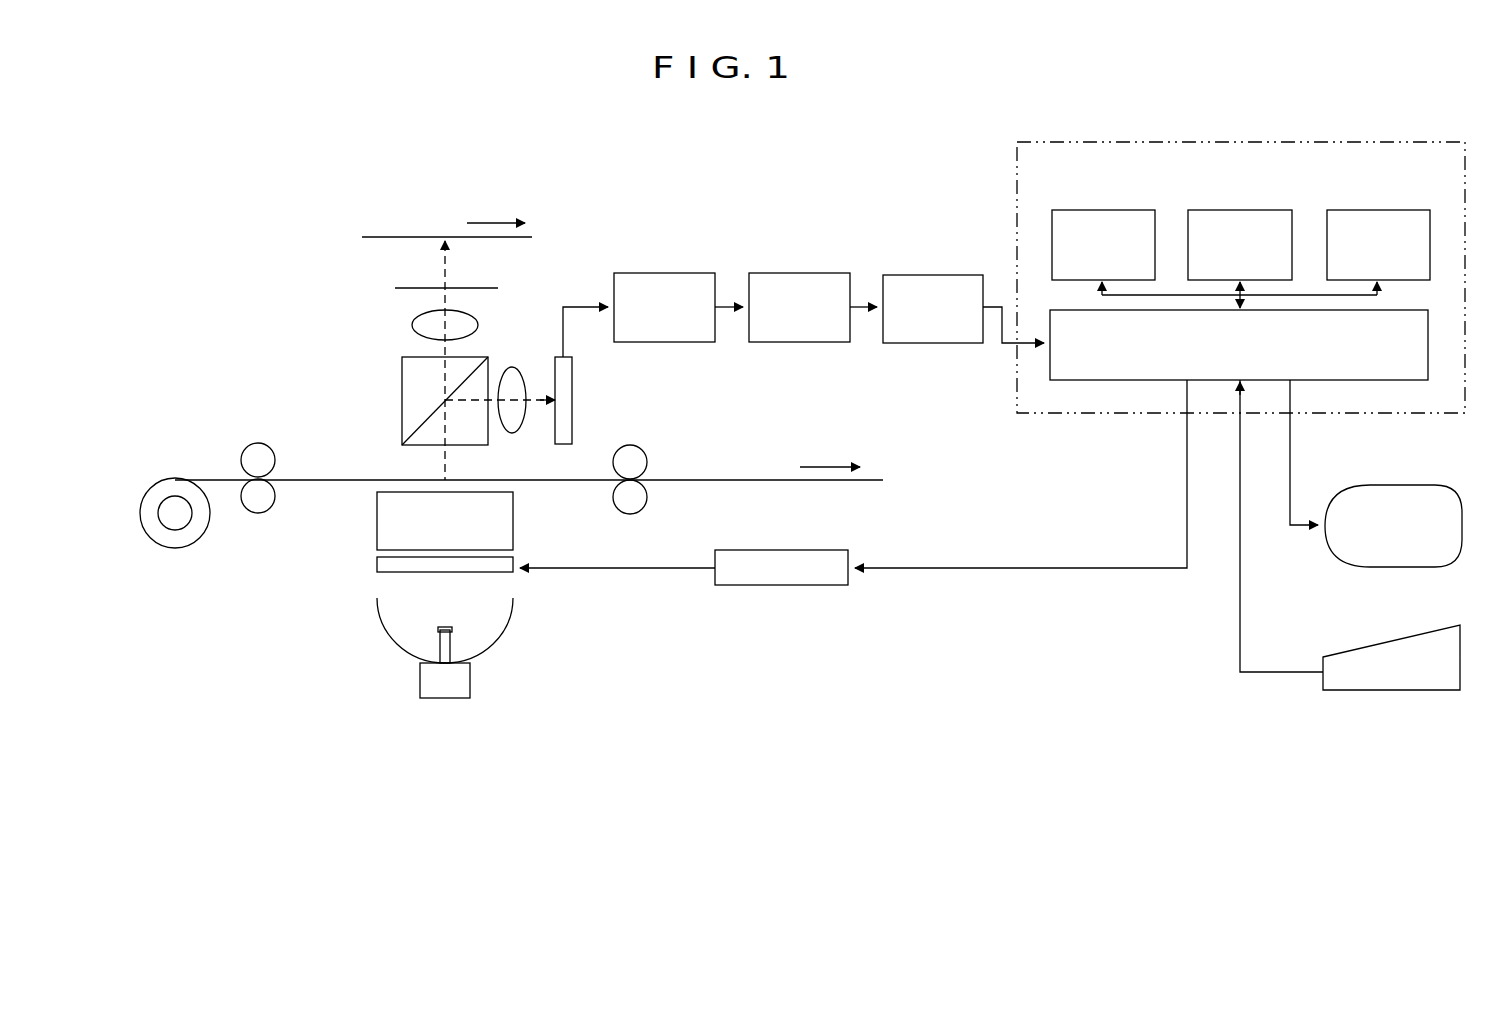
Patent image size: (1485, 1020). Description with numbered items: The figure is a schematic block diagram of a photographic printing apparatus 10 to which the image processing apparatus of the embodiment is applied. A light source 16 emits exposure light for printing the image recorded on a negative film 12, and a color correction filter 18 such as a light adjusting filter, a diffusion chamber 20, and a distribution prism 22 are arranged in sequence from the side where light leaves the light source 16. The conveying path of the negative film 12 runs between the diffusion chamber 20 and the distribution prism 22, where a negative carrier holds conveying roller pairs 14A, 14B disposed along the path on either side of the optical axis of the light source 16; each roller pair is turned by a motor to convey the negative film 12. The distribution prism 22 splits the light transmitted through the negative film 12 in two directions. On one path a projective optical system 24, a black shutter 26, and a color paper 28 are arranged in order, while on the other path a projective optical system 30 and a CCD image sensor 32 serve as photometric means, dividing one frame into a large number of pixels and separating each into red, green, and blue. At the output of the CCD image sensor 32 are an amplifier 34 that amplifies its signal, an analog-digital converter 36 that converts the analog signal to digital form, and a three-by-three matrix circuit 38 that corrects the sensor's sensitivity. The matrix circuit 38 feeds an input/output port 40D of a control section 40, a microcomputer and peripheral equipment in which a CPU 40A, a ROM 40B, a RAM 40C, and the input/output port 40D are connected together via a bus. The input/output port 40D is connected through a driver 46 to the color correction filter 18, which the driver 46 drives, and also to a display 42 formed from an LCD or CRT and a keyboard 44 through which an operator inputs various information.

The photographic printing apparatus 10 is at (245, 270).
The negative film 12 is at (752, 481).
The conveying roller pair 14A is at (645, 452).
The conveying roller pair 14B is at (258, 443).
The light source 16 is at (500, 640).
The color correction filter 18 is at (377, 562).
The diffusion chamber 20 is at (513, 520).
The distribution prism 22 is at (402, 382).
The projective optical system 24 is at (412, 326).
The black shutter 26 is at (498, 288).
The color paper 28 is at (378, 238).
The projective optical system 30 is at (514, 374).
The CCD image sensor 32 is at (572, 392).
The amplifier 34 is at (665, 273).
The analog-digital converter 36 is at (800, 273).
The 3×3 matrix circuit 38 is at (935, 274).
The control section 40 is at (1272, 143).
The CPU 40A is at (1227, 209).
The ROM 40B is at (1090, 209).
The RAM 40C is at (1365, 209).
The input/output port 40D is at (1100, 380).
The display 42 is at (1393, 485).
The keyboard 44 is at (1393, 638).
The driver 46 is at (782, 585).